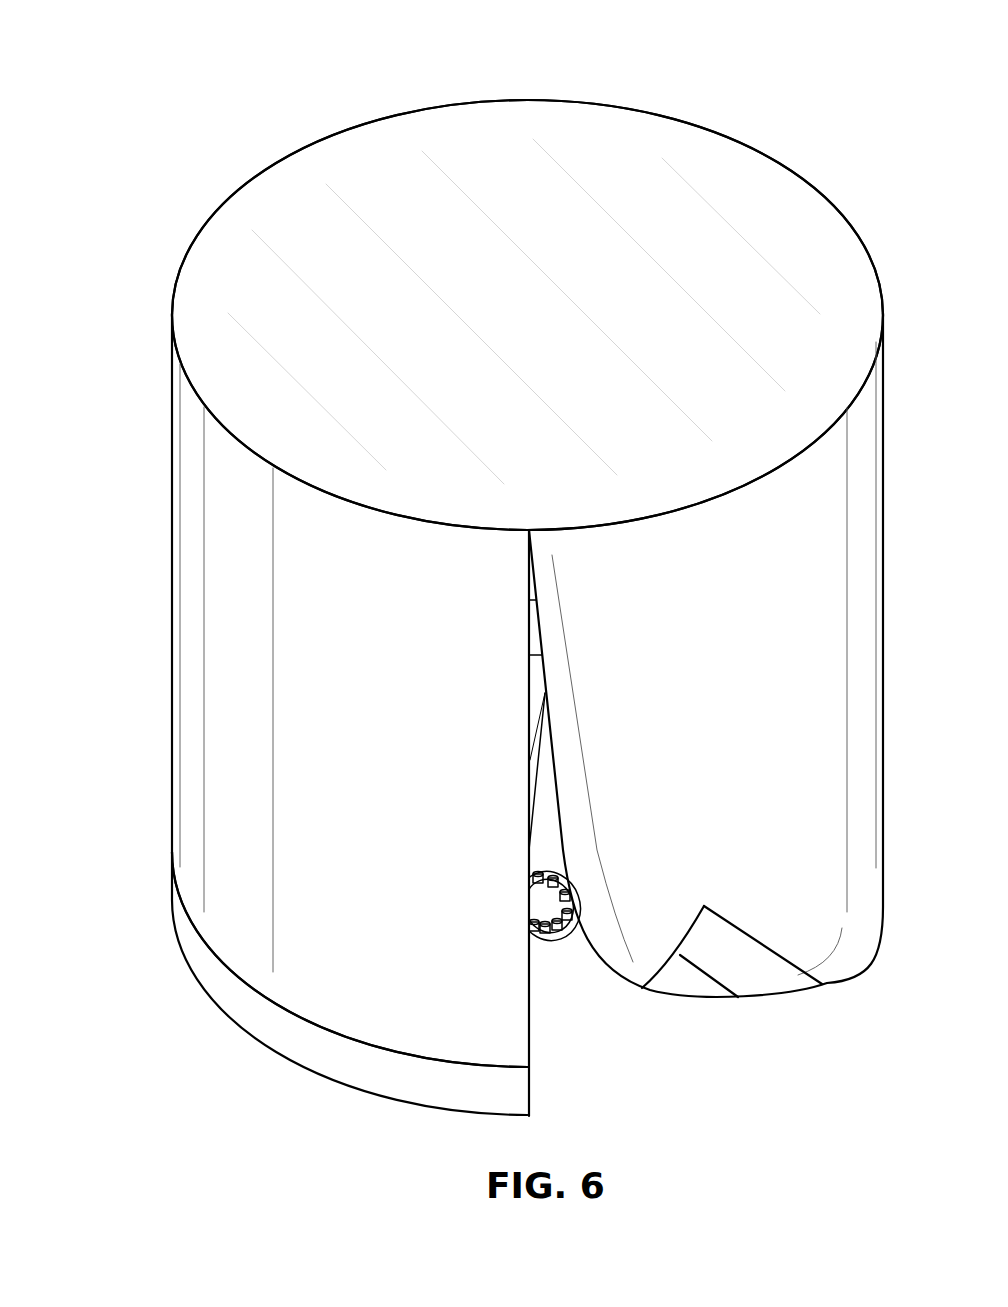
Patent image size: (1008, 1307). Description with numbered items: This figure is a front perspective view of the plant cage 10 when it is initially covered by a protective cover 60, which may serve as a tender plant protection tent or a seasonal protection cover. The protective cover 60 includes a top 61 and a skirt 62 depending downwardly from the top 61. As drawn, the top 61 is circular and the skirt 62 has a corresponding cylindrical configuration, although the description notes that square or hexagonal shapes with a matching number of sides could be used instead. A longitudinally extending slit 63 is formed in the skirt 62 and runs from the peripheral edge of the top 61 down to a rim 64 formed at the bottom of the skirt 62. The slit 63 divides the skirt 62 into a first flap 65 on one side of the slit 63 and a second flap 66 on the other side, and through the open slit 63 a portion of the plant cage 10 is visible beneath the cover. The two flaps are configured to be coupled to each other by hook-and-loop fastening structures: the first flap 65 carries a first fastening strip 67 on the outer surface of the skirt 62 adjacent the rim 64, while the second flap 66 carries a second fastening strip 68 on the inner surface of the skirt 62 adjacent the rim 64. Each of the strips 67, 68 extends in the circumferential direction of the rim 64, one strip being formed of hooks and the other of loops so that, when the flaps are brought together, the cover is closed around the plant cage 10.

The protective cover 60 is at (220, 133).
The top 61 is at (505, 152).
The skirt 62 is at (163, 657).
The slit 63 is at (531, 663).
The rim 64 is at (735, 930).
The first flap 65 is at (542, 1116).
The second flap 66 is at (704, 892).
The first fastening strip 67 is at (410, 1085).
The second fastening strip 68 is at (713, 955).
The plant cage 10 is at (560, 947).